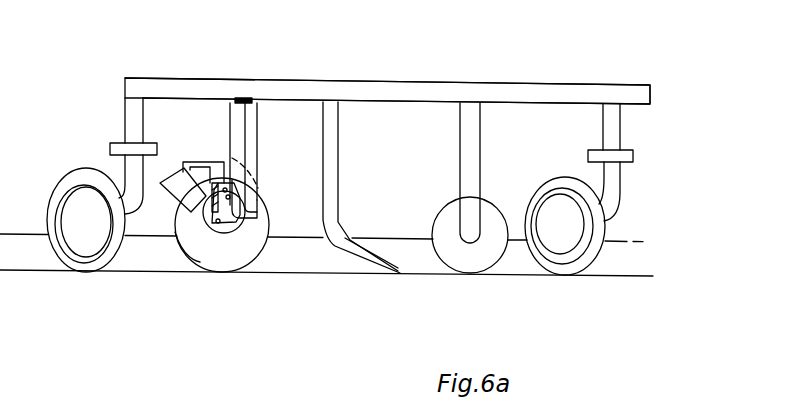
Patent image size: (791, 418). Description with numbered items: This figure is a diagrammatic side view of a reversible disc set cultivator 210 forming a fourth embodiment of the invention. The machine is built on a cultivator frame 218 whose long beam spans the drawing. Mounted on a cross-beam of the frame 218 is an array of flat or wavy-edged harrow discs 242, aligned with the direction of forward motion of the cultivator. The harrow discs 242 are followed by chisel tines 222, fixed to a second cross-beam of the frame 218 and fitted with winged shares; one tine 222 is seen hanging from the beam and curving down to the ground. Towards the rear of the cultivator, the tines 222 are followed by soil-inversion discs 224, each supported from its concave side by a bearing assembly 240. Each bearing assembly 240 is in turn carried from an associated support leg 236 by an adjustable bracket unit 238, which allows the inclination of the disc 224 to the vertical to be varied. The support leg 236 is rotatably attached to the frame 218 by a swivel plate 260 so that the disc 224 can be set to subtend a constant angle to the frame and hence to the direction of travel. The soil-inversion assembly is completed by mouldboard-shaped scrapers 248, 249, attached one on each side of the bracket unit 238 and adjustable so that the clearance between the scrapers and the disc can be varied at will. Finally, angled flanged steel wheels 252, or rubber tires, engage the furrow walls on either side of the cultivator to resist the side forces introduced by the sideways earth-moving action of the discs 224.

The reversible disc set cultivator 210 is at (668, 40).
The cultivator frame 218 is at (390, 86).
The chisel tines 222 is at (367, 247).
The soil-inversion discs 224 is at (265, 243).
The support leg 236 is at (255, 125).
The adjustable bracket unit 238 is at (191, 226).
The bearing assembly 240 is at (192, 266).
The harrow discs 242 is at (493, 218).
The mouldboard-shaped scraper 248 is at (173, 195).
The mouldboard-shaped scraper 249 is at (260, 183).
The angled flanged steel wheels 252 is at (62, 258).
The swivel plate 260 is at (233, 110).